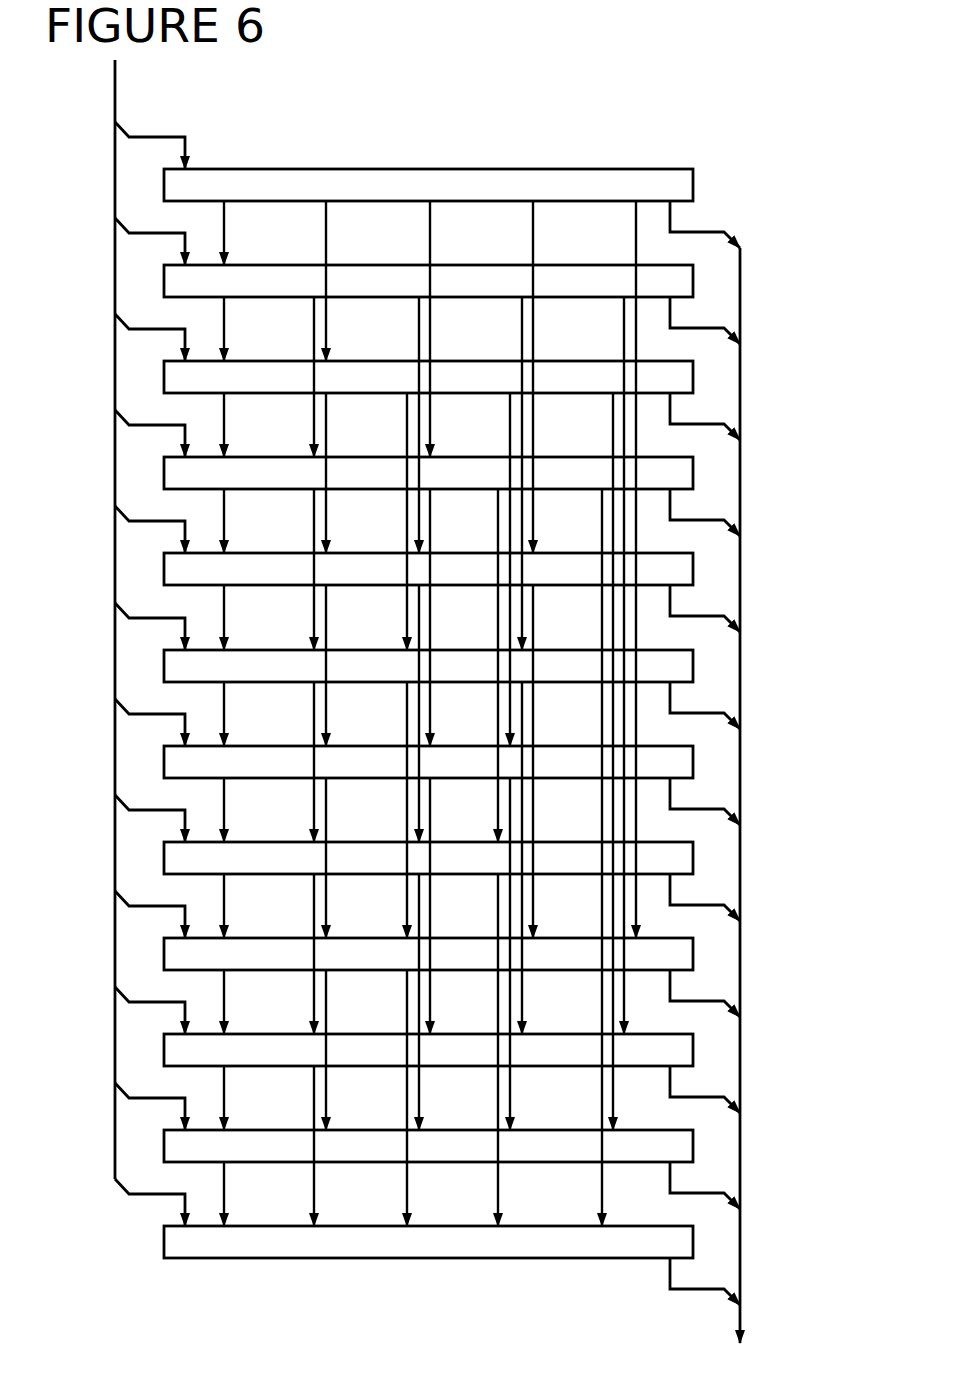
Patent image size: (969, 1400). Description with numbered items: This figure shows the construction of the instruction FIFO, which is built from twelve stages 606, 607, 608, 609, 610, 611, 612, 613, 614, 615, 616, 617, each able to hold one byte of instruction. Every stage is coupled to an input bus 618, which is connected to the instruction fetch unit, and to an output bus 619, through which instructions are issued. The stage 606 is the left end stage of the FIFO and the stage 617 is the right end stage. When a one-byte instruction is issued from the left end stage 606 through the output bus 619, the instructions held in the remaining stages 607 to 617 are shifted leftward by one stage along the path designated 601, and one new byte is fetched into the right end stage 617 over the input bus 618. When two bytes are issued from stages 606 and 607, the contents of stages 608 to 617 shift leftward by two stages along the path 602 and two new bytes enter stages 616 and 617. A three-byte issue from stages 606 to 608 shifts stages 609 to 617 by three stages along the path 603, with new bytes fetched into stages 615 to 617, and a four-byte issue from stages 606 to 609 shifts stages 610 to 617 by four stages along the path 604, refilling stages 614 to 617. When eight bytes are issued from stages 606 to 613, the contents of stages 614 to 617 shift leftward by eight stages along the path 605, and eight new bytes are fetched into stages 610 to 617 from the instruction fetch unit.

The one-stage leftward shift 601 is at (227, 1196).
The two-stage leftward shift 602 is at (317, 1196).
The three-stage leftward shift 603 is at (410, 1196).
The four-stage leftward shift 604 is at (501, 1196).
The eight-stage leftward shift 605 is at (605, 1196).
The stage 606 is at (693, 1248).
The stage 607 is at (693, 1152).
The stage 608 is at (693, 1056).
The stage 609 is at (693, 960).
The stage 610 is at (693, 864).
The stage 611 is at (693, 768).
The stage 612 is at (693, 672).
The stage 613 is at (693, 575).
The stage 614 is at (693, 479).
The stage 615 is at (693, 383).
The stage 616 is at (693, 287).
The stage 617 is at (693, 191).
The input bus 618 is at (116, 180).
The output bus 619 is at (746, 332).